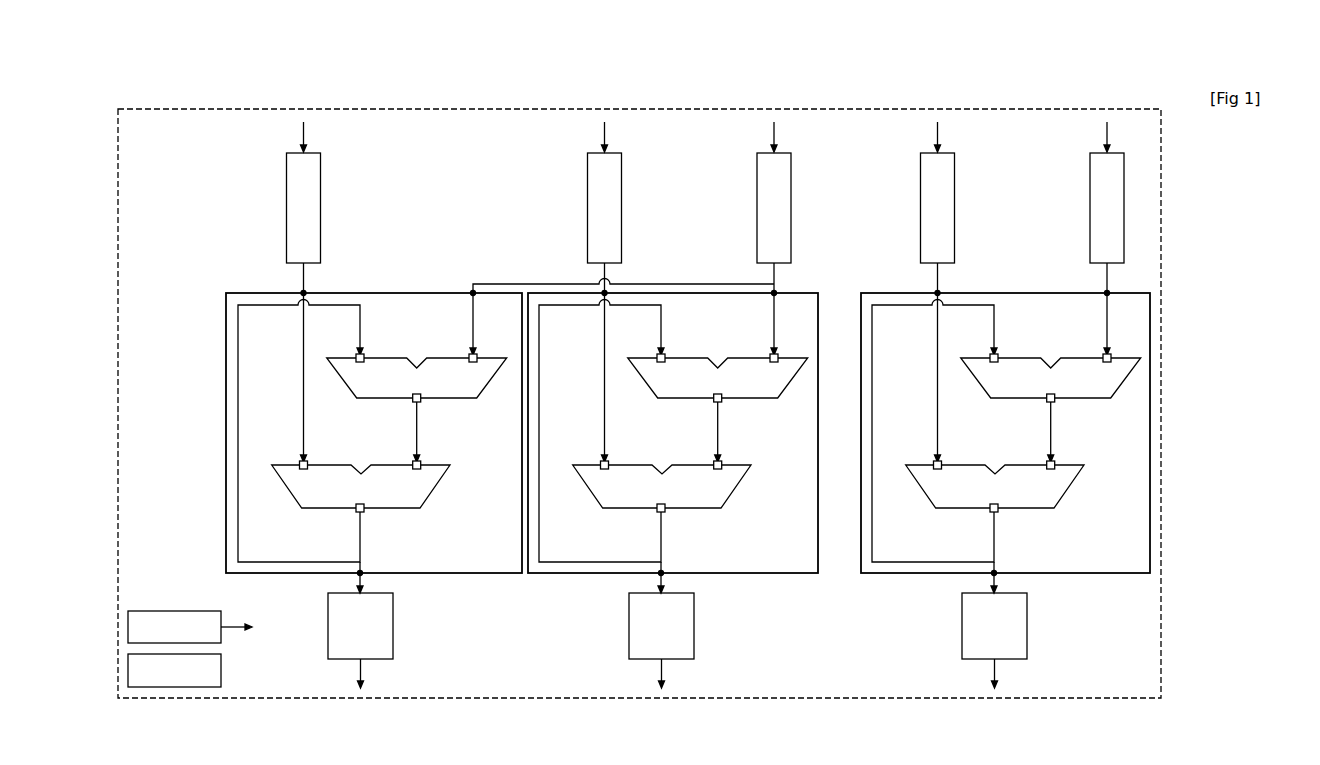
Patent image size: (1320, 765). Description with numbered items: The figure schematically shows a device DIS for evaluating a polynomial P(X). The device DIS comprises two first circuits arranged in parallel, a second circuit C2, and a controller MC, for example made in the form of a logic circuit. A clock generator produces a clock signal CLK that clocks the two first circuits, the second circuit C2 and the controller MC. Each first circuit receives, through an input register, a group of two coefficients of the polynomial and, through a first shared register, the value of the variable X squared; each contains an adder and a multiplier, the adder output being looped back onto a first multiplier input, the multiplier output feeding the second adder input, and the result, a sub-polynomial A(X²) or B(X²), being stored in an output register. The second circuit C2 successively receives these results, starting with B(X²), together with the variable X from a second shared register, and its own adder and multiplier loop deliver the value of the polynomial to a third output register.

The device DIS is at (641, 108).
The second circuit C2 is at (1005, 433).
The clock signal CLK is at (254, 627).
The controller MC is at (174, 670).